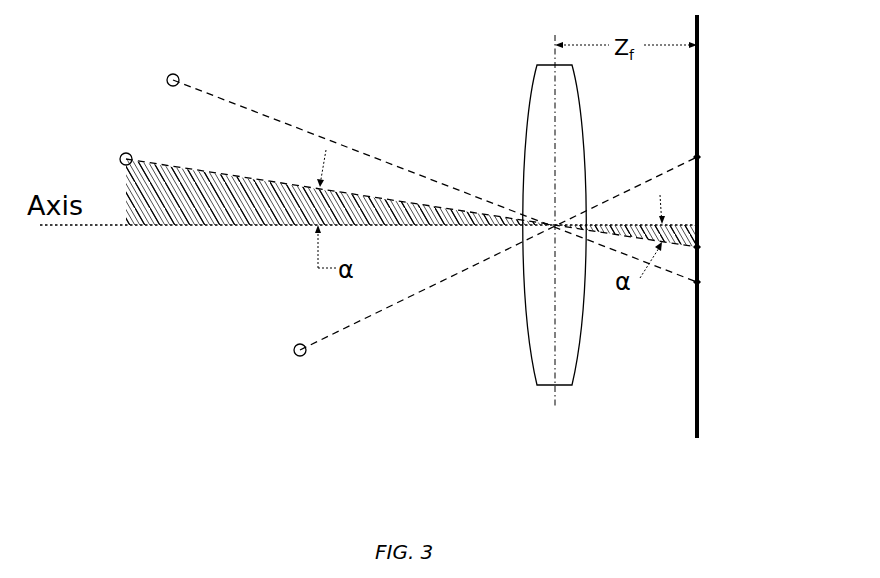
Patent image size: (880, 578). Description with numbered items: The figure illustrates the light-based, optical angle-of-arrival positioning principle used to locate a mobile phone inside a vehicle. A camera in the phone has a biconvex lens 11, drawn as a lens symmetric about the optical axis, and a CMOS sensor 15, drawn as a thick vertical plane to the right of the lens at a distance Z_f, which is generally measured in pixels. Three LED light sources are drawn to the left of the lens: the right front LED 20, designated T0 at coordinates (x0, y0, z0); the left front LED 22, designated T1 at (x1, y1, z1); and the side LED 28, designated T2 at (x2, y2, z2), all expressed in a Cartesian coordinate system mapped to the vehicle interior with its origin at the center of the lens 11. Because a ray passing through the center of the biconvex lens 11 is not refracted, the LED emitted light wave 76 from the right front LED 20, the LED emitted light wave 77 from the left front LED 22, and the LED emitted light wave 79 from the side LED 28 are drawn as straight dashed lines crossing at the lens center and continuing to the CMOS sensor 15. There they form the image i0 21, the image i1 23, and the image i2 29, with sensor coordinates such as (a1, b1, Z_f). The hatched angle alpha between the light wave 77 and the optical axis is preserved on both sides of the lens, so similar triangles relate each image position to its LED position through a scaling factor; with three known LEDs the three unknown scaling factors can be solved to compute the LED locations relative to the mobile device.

The biconvex lens 11 is at (573, 386).
The CMOS sensor 15 is at (699, 400).
The right front LED 20 is at (172, 73).
The left front LED 22 is at (125, 152).
The side LED 28 is at (299, 343).
The LED emitted light wave 76 is at (340, 143).
The LED emitted light wave 77 is at (258, 180).
The LED emitted light wave 79 is at (387, 308).
The image i2 29 is at (699, 153).
The image i1 23 is at (699, 243).
The image i0 21 is at (699, 287).